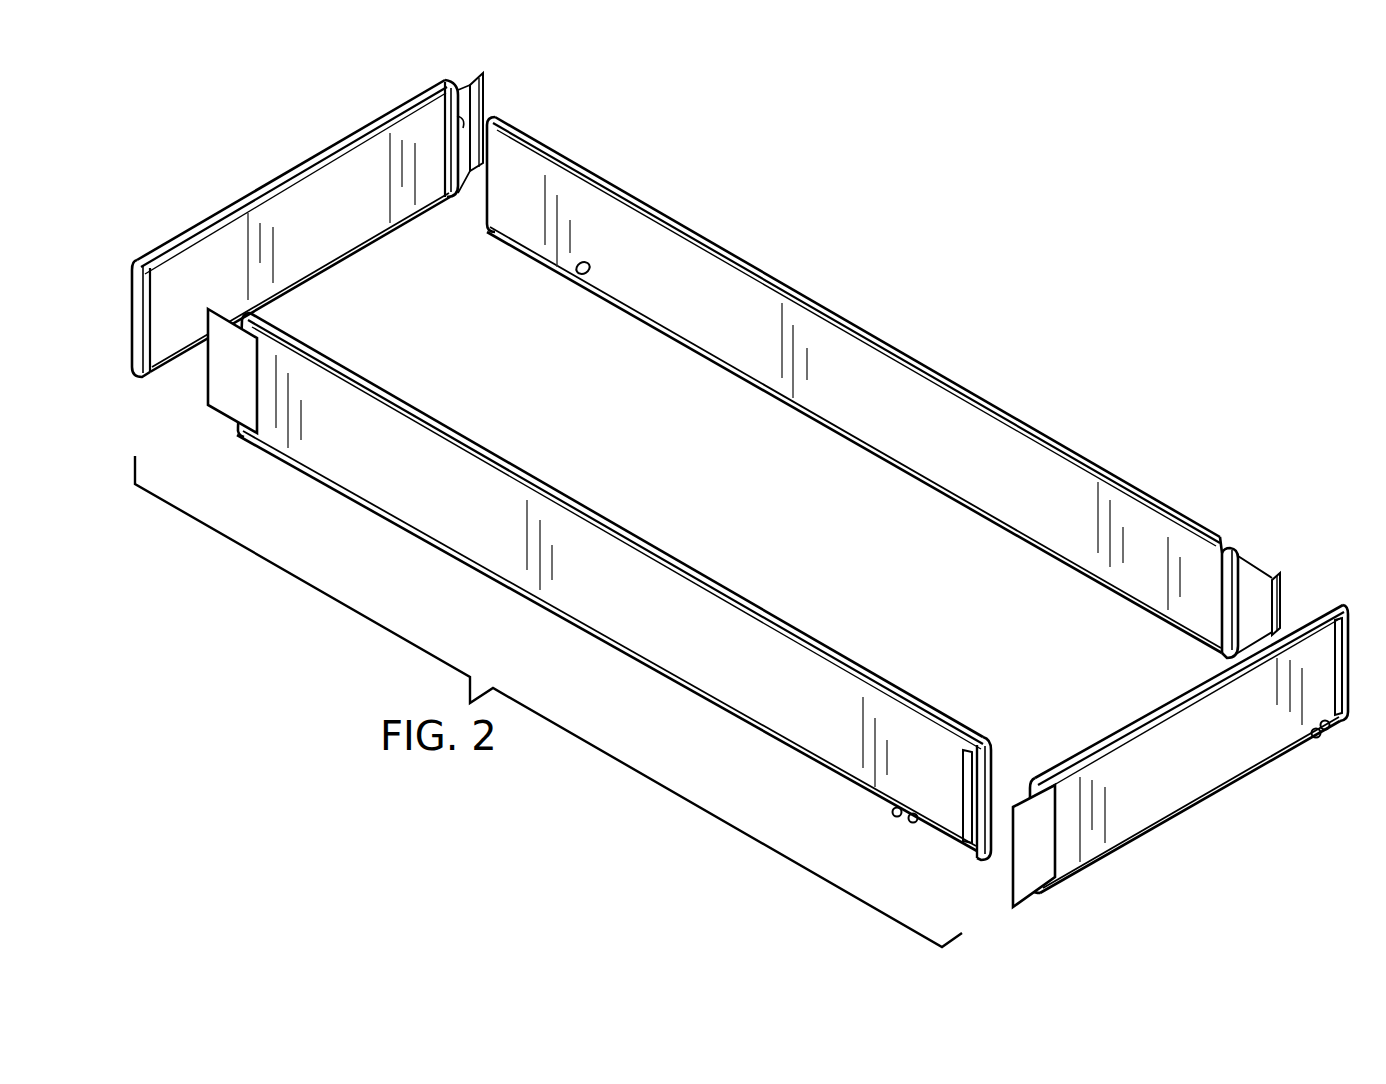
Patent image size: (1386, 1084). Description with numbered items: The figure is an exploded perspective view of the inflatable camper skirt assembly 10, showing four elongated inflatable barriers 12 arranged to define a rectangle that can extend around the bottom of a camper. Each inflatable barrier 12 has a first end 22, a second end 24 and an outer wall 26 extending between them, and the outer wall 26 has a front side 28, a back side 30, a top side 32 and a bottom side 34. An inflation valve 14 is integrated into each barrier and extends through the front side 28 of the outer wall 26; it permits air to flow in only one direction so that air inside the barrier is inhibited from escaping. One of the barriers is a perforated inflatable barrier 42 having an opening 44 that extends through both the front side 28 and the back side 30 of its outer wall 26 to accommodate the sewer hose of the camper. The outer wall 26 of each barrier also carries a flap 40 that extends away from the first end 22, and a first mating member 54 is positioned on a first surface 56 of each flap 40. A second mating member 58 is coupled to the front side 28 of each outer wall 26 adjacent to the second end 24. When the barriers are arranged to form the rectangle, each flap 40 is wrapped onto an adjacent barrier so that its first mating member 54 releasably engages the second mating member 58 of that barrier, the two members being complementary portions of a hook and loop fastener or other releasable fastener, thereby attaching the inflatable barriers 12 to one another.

The inflatable camper skirt assembly 10 is at (1037, 200).
The inflatable barrier 12 is at (736, 502).
The inflation valve 14 is at (910, 822).
The first end 22 is at (460, 95).
The second end 24 is at (489, 112).
The outer wall 26 is at (797, 692).
The front side 28 is at (1113, 470).
The back side 30 is at (950, 427).
The top side 32 is at (1222, 545).
The bottom side 34 is at (898, 473).
The flap 40 is at (233, 370).
The perforated inflatable barrier 42 is at (845, 273).
The opening 44 is at (584, 262).
The first mating member 54 is at (472, 172).
The first surface 56 is at (447, 143).
The second mating member 58 is at (966, 790).